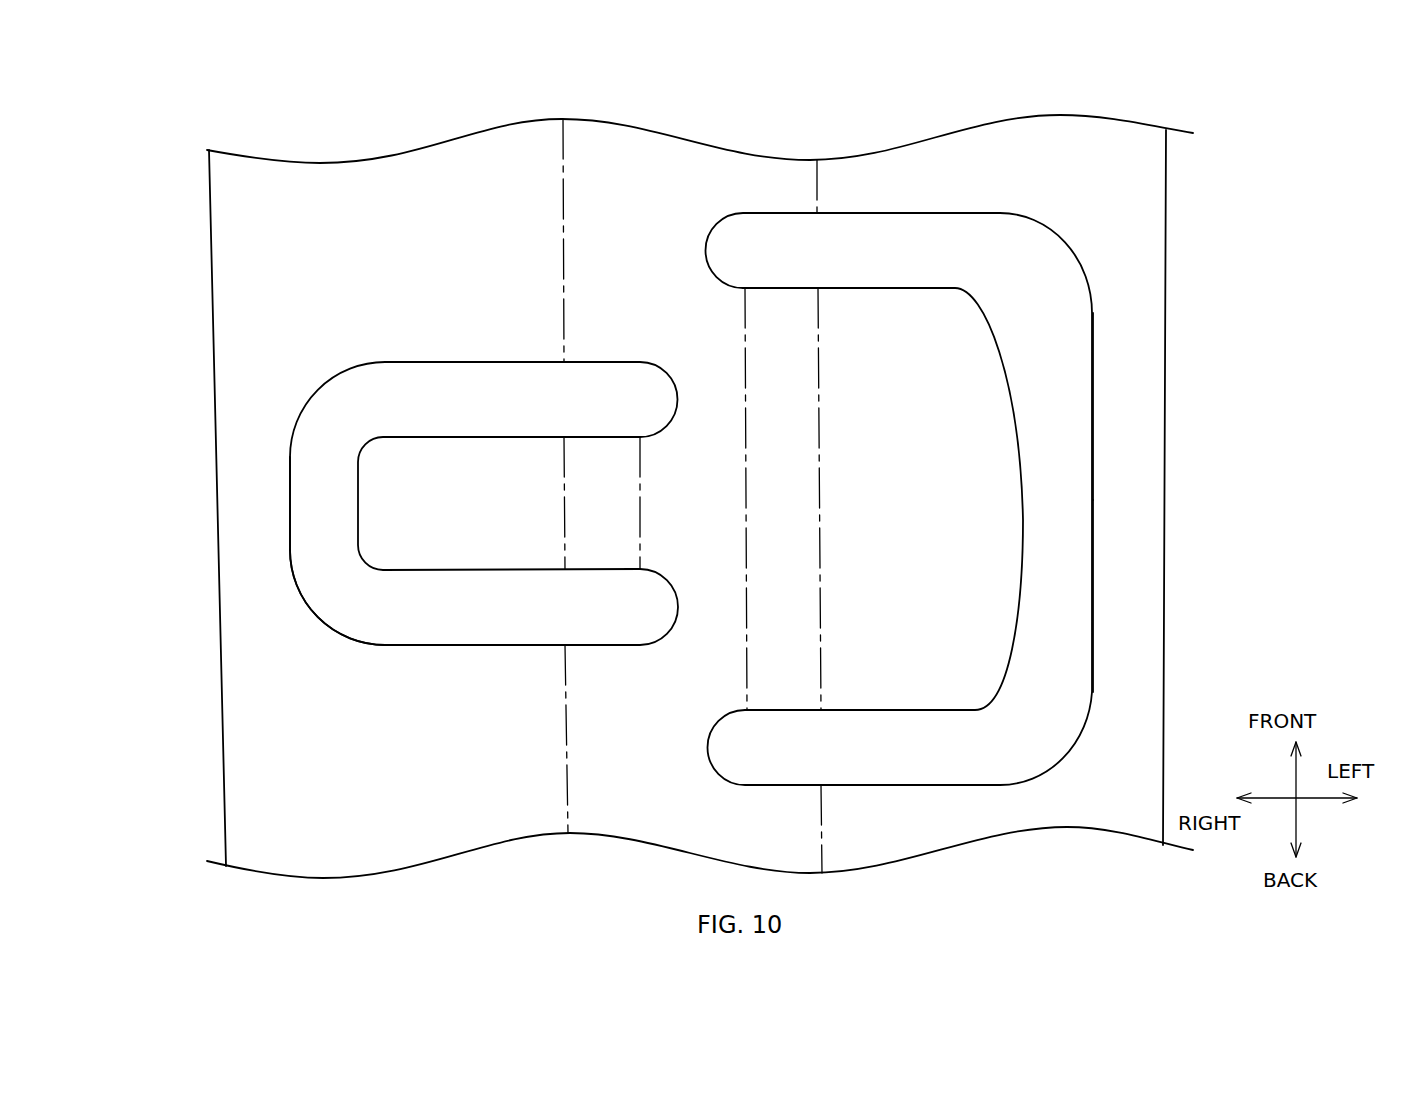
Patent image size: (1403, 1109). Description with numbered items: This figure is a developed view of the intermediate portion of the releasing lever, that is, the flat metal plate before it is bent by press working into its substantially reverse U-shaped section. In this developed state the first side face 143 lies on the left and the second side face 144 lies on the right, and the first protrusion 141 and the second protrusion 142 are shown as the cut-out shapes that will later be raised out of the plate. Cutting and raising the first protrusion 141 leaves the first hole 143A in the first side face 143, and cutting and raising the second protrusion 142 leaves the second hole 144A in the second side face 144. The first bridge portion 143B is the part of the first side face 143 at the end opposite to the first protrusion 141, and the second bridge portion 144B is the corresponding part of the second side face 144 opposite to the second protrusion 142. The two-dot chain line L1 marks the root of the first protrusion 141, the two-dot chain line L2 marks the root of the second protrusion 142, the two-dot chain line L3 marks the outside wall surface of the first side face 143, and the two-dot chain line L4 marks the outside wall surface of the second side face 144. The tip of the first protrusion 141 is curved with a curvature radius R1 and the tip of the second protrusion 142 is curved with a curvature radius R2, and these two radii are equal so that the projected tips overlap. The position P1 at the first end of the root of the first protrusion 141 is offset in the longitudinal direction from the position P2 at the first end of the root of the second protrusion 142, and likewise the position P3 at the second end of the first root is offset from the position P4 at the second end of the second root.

The first protrusion 141 is at (358, 473).
The second protrusion 142 is at (1008, 383).
The first side face 143 is at (282, 750).
The first hole 143A is at (337, 572).
The first bridge portion 143B is at (257, 515).
The second side face 144 is at (1130, 248).
The second hole 144A is at (1058, 645).
The second bridge portion 144B is at (1132, 495).
The two-dot chain line L1 is at (640, 487).
The two-dot chain line L2 is at (745, 447).
The two-dot chain line L3 is at (563, 238).
The two-dot chain line L4 is at (818, 372).
The position P1 is at (643, 433).
The position P2 is at (742, 290).
The position P3 is at (643, 557).
The position P4 is at (744, 704).
The curvature radius R1 is at (360, 513).
The curvature radius R2 is at (1020, 457).